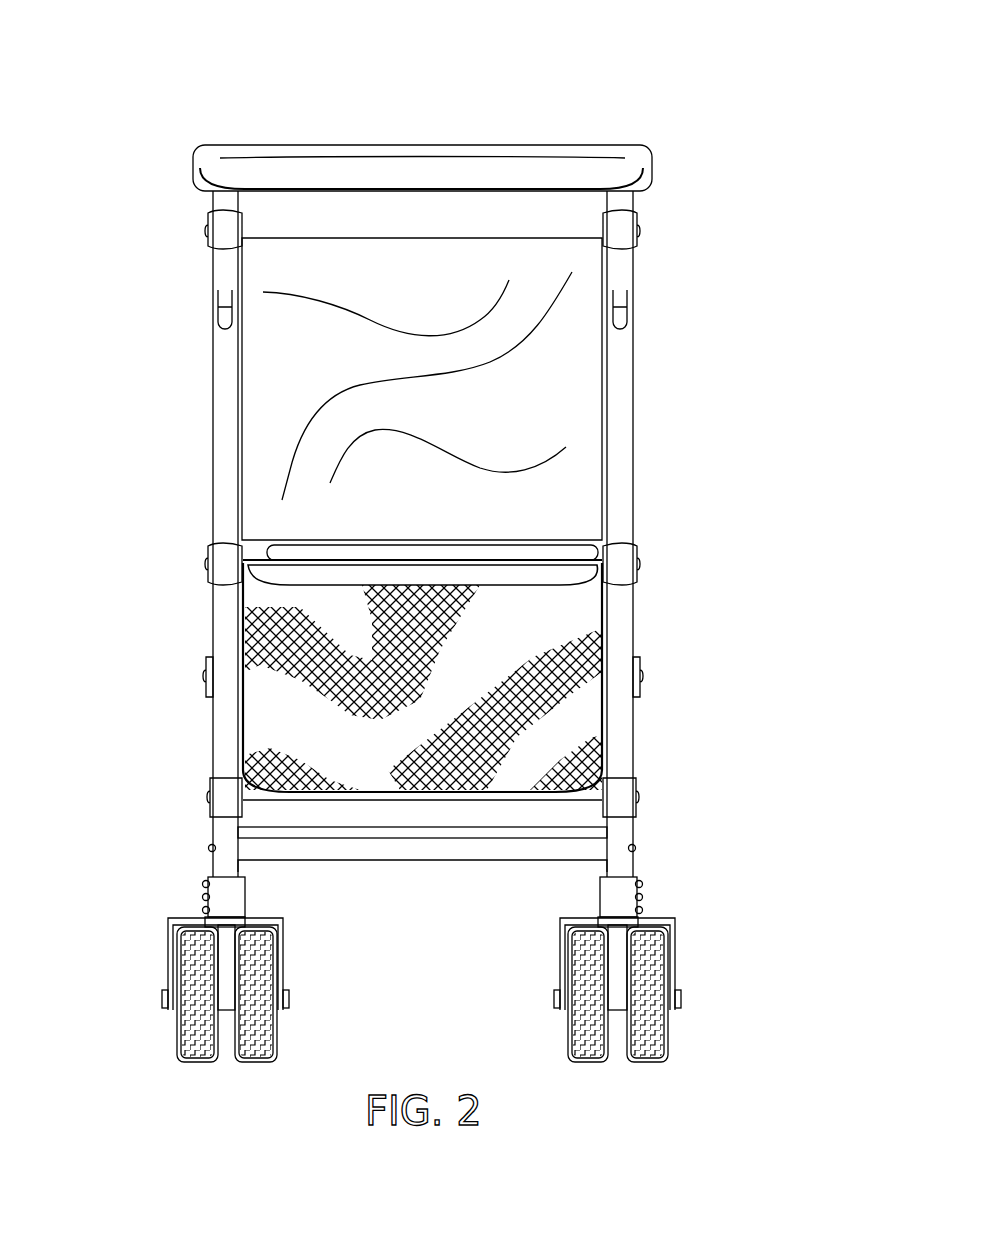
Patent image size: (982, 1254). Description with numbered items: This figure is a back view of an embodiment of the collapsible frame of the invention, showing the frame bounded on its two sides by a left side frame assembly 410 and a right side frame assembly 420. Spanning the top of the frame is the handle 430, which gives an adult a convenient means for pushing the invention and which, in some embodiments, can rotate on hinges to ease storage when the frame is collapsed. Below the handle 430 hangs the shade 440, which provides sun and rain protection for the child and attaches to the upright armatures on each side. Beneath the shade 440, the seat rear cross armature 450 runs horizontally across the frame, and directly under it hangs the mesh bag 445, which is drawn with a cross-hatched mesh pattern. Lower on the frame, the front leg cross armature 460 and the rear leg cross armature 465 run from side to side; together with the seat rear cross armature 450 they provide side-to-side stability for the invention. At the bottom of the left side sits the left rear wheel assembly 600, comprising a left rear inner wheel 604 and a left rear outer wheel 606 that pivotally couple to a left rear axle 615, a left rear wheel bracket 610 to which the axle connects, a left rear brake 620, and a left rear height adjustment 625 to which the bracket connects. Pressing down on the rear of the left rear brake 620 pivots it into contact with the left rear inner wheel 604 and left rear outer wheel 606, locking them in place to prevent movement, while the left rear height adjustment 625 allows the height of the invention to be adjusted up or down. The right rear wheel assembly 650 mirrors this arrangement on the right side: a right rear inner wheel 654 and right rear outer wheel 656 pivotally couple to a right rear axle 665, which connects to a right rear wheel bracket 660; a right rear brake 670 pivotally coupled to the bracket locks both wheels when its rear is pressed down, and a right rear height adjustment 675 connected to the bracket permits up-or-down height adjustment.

The left side frame assembly 410 is at (253, 70).
The right side frame assembly 420 is at (664, 70).
The handle 430 is at (535, 180).
The shade 440 is at (565, 395).
The seat rear cross armature 450 is at (548, 551).
The mesh bag 445 is at (548, 657).
The front leg cross armature 460 is at (540, 812).
The rear leg cross armature 465 is at (408, 850).
The left rear wheel assembly 600 is at (141, 922).
The left rear inner wheel 604 is at (253, 1043).
The left rear outer wheel 606 is at (195, 1043).
The left rear wheel bracket 610 is at (287, 962).
The left rear axle 615 is at (290, 1003).
The left rear brake 620 is at (237, 916).
The left rear height adjustment 625 is at (203, 884).
The right rear wheel assembly 650 is at (701, 922).
The right rear inner wheel 654 is at (585, 1043).
The right rear outer wheel 656 is at (644, 1033).
The right rear wheel bracket 660 is at (558, 921).
The right rear axle 665 is at (557, 1000).
The right rear brake 670 is at (600, 917).
The right rear height adjustment 675 is at (642, 895).